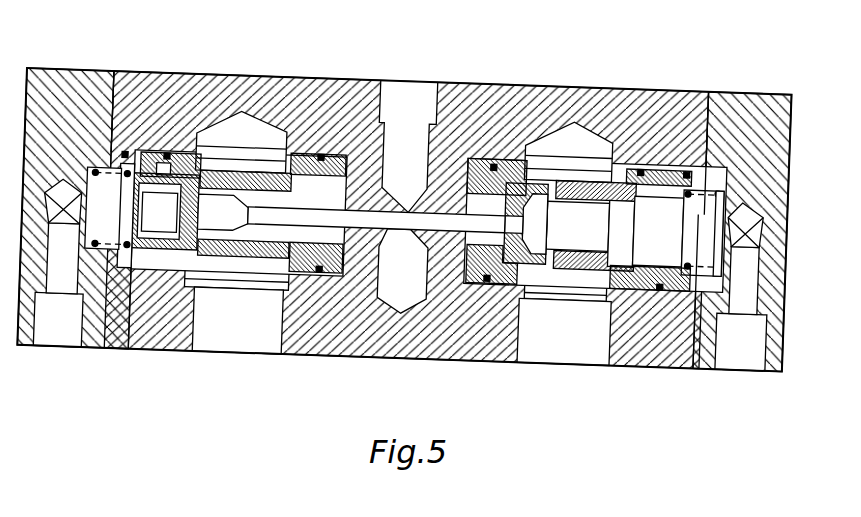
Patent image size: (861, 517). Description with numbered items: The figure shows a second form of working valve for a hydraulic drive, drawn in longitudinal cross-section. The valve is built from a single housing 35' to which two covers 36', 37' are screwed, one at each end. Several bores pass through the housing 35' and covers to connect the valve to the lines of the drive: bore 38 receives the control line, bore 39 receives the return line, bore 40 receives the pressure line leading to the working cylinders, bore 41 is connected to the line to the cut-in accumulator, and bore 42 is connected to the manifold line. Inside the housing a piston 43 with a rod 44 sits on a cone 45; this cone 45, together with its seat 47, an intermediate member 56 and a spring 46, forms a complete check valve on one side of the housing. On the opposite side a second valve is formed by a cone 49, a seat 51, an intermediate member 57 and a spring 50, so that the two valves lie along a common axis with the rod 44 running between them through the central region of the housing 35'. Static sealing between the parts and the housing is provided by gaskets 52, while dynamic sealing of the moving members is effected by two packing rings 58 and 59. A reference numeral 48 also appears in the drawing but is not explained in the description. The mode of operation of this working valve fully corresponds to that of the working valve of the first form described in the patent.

The housing 35' is at (406, 198).
The cover 36' is at (77, 186).
The cover 37' is at (742, 204).
The bore 38 is at (67, 340).
The bore 39 is at (222, 337).
The bore 40 is at (402, 93).
The bore 41 is at (553, 338).
The bore 42 is at (728, 358).
The piston 43 is at (176, 265).
The rod 44 is at (383, 220).
The cone 45 is at (535, 203).
The spring 46 is at (720, 195).
The seat 47 is at (515, 168).
The seal bushing 48 is at (493, 167).
The cone 49 is at (273, 188).
The spring 50 is at (97, 171).
The seat 51 is at (337, 157).
The gaskets 52 is at (167, 152).
The intermediate member 56 is at (639, 183).
The intermediate member 57 is at (131, 268).
The packing ring 58 is at (170, 160).
The packing ring 59 is at (303, 272).